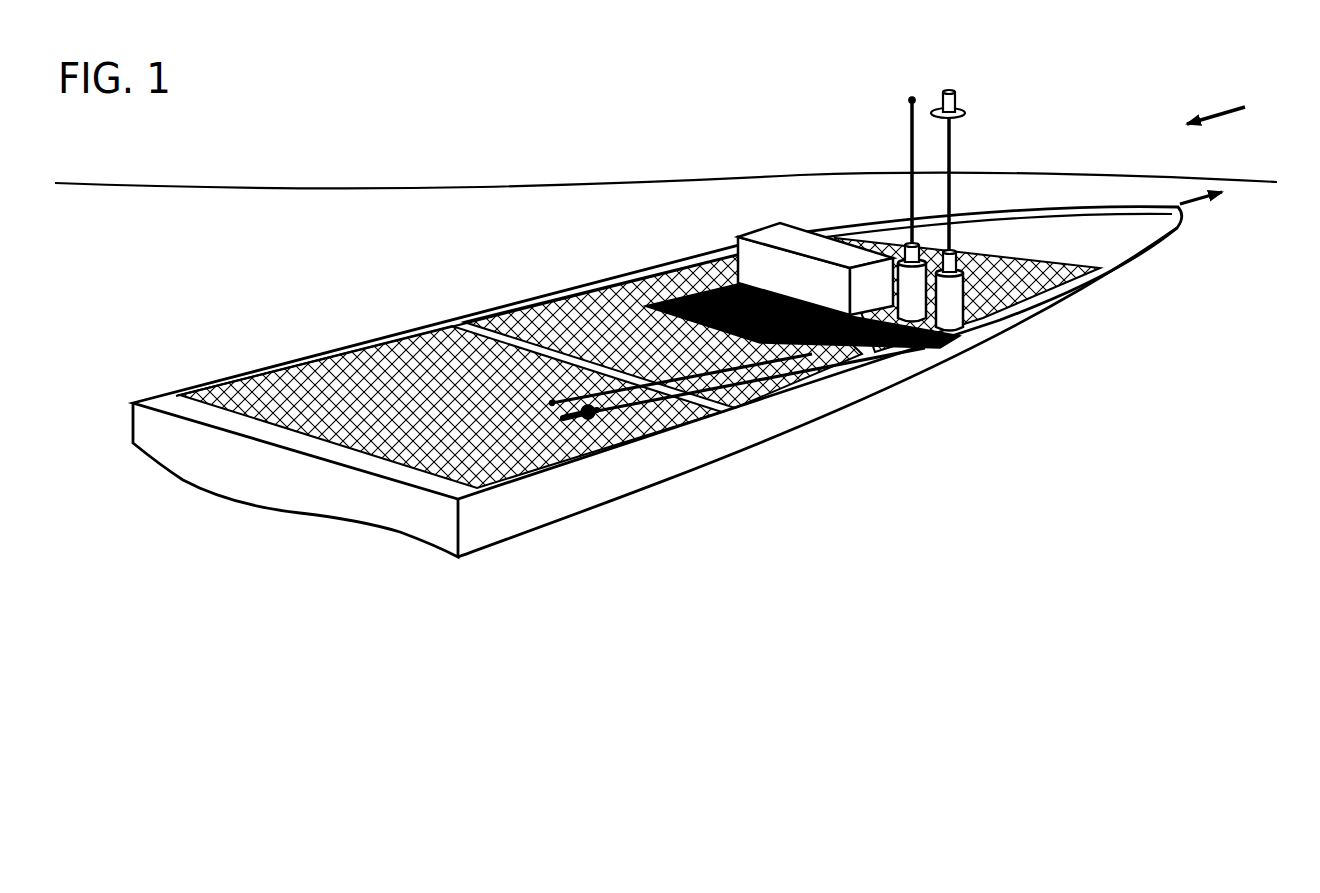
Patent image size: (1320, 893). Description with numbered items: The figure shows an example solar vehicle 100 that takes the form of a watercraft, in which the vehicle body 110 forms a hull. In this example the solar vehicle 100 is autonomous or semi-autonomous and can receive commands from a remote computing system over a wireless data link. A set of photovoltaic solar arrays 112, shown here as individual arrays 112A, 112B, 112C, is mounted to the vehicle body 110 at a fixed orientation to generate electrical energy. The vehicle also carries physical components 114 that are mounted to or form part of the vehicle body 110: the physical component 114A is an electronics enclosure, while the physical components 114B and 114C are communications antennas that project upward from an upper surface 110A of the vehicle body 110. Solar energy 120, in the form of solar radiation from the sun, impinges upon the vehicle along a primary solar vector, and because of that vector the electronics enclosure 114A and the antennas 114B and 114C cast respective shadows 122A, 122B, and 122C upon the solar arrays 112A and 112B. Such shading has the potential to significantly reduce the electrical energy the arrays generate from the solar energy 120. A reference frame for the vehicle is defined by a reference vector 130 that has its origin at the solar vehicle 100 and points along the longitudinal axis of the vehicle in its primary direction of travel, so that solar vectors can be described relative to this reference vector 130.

The solar vehicle 100 is at (666, 323).
The vehicle body 110 is at (143, 427).
The upper surface of vehicle body 110A is at (165, 400).
The photovoltaic solar arrays 112 is at (611, 337).
The photovoltaic solar array 112A is at (273, 382).
The photovoltaic solar array 112B is at (523, 323).
The photovoltaic solar array 112C is at (887, 241).
The physical components 114 is at (794, 276).
The electronics enclosure 114A is at (770, 238).
The communications antenna 114B is at (909, 163).
The communications antenna 114C is at (952, 162).
The solar energy 120 is at (1235, 110).
The shadow 122A is at (677, 302).
The shadow 122B is at (703, 365).
The shadow 122C is at (808, 355).
The reference vector 130 is at (1184, 206).